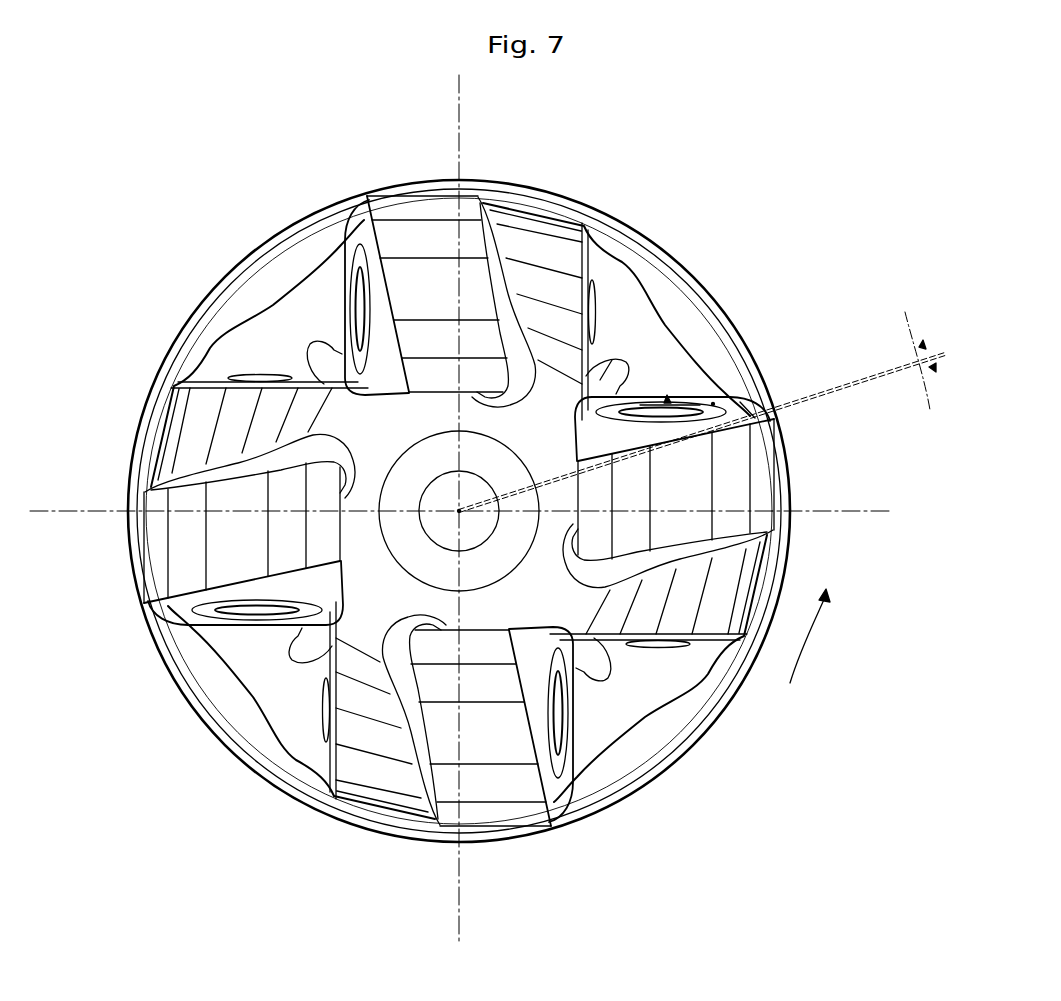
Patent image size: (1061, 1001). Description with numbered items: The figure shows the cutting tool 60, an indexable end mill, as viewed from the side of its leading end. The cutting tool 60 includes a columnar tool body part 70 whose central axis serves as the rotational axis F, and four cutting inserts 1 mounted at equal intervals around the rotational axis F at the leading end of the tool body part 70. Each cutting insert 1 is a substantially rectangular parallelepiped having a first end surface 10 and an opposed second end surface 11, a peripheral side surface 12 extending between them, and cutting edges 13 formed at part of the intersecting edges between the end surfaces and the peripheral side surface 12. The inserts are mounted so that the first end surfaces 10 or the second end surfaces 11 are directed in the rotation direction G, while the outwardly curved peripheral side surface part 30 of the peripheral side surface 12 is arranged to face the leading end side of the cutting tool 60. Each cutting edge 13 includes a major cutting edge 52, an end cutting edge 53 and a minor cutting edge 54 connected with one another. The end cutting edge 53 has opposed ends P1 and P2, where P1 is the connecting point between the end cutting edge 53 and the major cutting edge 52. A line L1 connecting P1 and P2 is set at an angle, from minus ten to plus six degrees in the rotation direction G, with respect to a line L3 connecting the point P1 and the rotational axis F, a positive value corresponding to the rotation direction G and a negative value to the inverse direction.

The cutting insert 1 is at (463, 512).
The first end surface 10 is at (358, 228).
The second end surface 11 is at (505, 222).
The peripheral side surface 12 is at (779, 489).
The cutting edge 13 is at (363, 300).
The peripheral side surface part 30 is at (428, 205).
The major cutting edge 52 is at (742, 402).
The end cutting edge 53 is at (684, 416).
The minor cutting edge 54 is at (607, 384).
The cutting tool 60 is at (596, 133).
The tool body part 70 is at (626, 228).
The rotational axis F is at (451, 527).
The rotation direction G is at (815, 636).
The line connecting the opposed ends of the end cutting edge L1 is at (932, 354).
The line connecting point P1 and the rotational axis L3 is at (933, 365).
The connecting point between the end cutting edge and the major cutting edge P1 is at (713, 404).
The end of the end cutting edge P2 is at (667, 396).